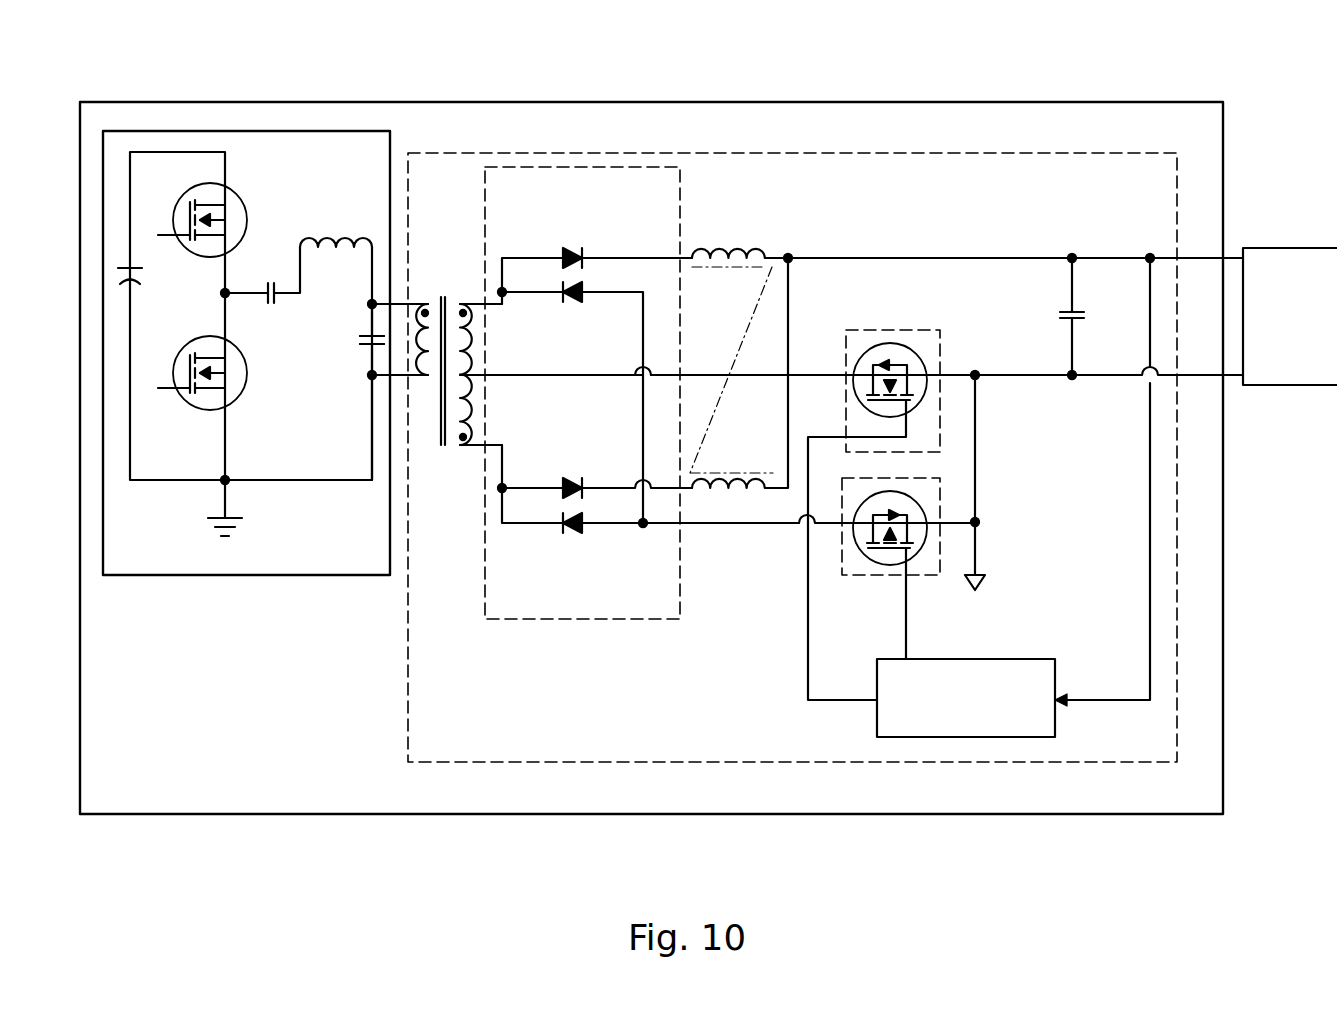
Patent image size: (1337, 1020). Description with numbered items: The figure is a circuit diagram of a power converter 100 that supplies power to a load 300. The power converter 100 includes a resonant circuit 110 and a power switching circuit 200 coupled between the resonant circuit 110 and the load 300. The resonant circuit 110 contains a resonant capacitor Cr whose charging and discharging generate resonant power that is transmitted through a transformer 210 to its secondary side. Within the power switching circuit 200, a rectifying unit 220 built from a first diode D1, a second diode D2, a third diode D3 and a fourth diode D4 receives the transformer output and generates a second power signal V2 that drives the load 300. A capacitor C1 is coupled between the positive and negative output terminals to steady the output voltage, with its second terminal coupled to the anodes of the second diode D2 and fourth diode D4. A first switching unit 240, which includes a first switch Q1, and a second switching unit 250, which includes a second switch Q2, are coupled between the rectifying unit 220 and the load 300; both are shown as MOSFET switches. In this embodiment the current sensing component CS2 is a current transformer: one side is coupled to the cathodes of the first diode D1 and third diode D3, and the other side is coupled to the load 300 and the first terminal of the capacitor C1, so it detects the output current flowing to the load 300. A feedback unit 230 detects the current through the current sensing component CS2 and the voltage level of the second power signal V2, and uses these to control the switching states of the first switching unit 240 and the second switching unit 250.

The power converter 100 is at (1170, 101).
The resonant circuit 110 is at (246, 312).
The power switching circuit 200 is at (1060, 152).
The transformer 210 is at (440, 297).
The rectifying unit 220 is at (642, 334).
The feedback unit 230 is at (966, 737).
The first switching unit 240 is at (883, 485).
The second switching unit 250 is at (887, 568).
The load 300 is at (1278, 247).
The resonant capacitor Cr is at (350, 343).
The first diode D1 is at (573, 250).
The second diode D2 is at (571, 305).
The third diode D3 is at (573, 480).
The fourth diode D4 is at (571, 538).
The current sensing component CS2 is at (728, 246).
The first switch Q1 is at (915, 355).
The second switch Q2 is at (918, 555).
The capacitor C1 is at (1085, 315).
The second power signal V2 is at (1072, 255).